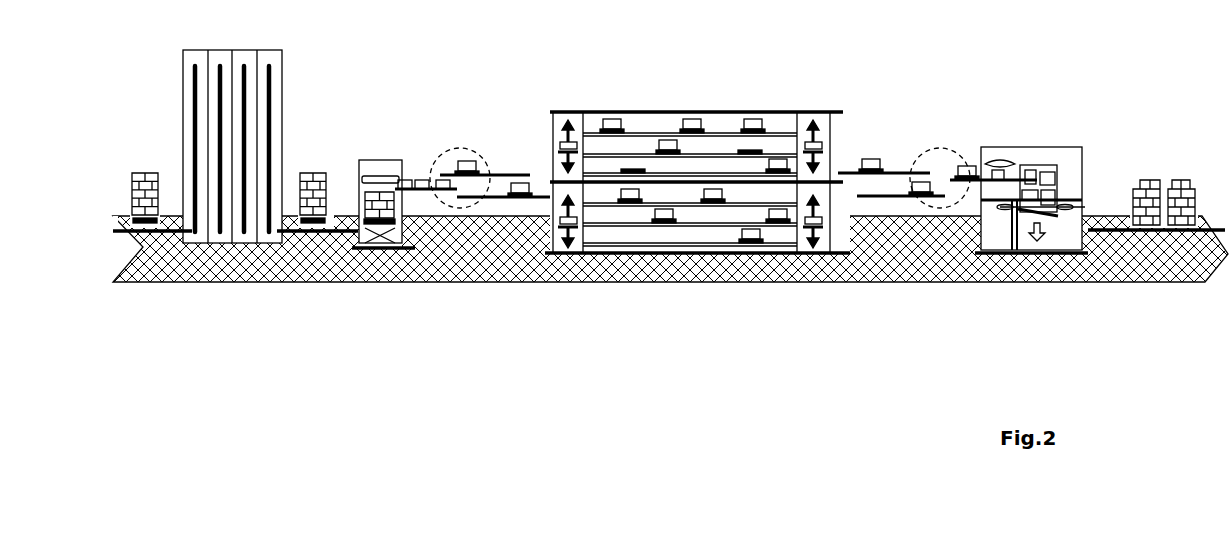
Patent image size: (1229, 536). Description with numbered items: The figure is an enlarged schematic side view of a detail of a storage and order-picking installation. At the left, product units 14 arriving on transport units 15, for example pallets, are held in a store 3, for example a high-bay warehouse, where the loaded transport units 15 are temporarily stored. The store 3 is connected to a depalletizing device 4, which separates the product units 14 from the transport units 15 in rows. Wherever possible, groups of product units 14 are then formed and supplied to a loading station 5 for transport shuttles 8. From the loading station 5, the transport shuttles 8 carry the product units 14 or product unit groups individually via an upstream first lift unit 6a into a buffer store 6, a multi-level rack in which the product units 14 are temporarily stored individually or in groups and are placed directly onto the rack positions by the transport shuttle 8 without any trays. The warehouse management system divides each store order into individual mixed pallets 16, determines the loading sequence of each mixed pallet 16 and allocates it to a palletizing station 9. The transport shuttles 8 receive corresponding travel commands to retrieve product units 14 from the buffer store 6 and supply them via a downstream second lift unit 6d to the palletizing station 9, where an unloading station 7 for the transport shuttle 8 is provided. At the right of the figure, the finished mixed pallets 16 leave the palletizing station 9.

The store 3 is at (276, 81).
The transport units 15 is at (143, 175).
The depalletizing device 4 is at (377, 167).
The loading station 5 is at (461, 150).
The buffer store 6 is at (665, 112).
The first lift unit 6a is at (562, 116).
The second lift unit 6d is at (820, 117).
The transport shuttles 8 is at (712, 192).
The product units 14 is at (870, 163).
The unloading station 7 is at (945, 158).
The palletizing station 9 is at (1066, 152).
The mixed pallets 16 is at (1145, 192).